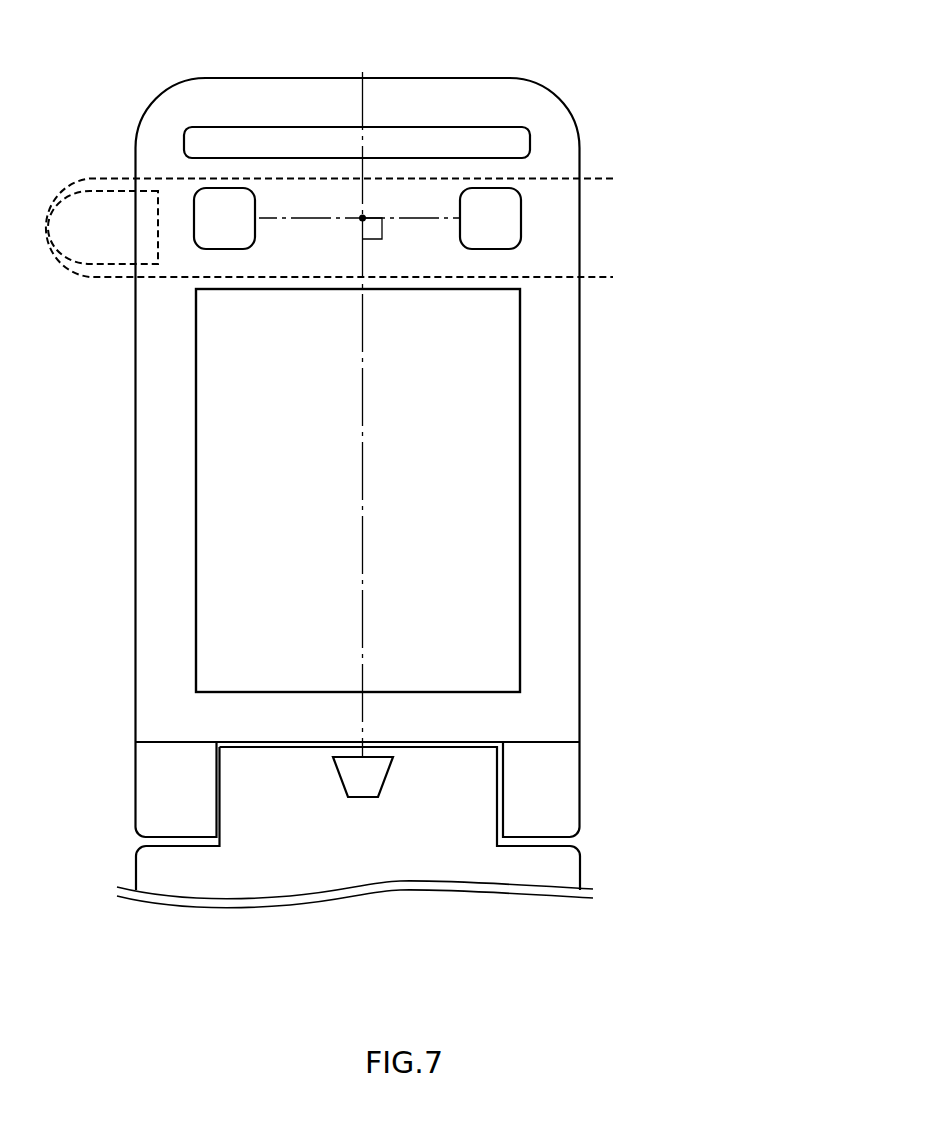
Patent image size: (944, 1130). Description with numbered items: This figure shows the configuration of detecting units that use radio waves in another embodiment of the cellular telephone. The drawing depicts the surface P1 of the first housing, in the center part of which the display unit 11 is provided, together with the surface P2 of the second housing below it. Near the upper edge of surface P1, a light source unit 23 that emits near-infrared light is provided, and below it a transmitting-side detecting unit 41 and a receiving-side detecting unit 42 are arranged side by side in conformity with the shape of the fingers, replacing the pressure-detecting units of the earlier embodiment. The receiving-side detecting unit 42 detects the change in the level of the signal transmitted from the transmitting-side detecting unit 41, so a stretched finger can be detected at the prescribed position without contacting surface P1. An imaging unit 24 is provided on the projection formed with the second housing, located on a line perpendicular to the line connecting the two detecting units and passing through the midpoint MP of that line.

The display unit 11 is at (195, 490).
The light source unit 23 is at (457, 128).
The imaging unit 24 is at (378, 785).
The transmitting-side detecting unit 41 is at (503, 250).
The receiving-side detecting unit 42 is at (235, 245).
The midpoint MP is at (362, 215).
The surface of the first housing P1 is at (573, 608).
The surface of the second housing P2 is at (575, 868).